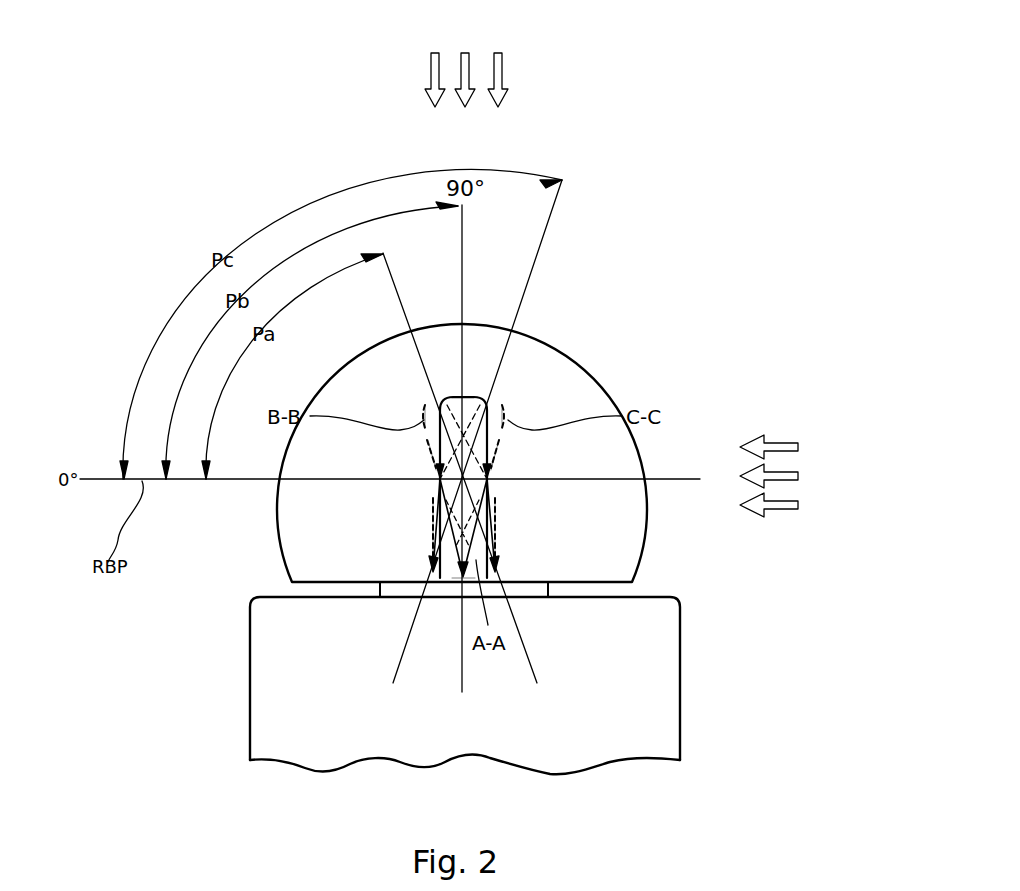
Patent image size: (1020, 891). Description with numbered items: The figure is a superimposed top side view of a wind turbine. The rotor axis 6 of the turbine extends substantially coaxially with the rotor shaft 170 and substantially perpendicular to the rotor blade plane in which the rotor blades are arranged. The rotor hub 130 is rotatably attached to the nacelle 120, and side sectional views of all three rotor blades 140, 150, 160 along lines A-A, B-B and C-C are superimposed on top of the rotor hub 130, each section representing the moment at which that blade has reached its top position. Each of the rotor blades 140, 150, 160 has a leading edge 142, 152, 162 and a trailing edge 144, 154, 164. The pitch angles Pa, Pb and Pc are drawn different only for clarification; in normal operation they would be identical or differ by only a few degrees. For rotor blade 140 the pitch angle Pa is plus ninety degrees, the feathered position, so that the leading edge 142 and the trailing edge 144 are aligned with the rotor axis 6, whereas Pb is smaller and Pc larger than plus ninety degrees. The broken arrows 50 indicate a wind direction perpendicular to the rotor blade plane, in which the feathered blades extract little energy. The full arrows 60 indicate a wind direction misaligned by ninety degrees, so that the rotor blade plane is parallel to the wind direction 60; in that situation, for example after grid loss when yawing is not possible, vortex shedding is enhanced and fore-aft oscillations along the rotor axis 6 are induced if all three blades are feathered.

The rotor axis 6 is at (464, 688).
The broken arrows 50 is at (505, 70).
The full arrows 60 is at (770, 440).
The nacelle 120 is at (668, 640).
The rotor hub 130 is at (300, 566).
The rotor blade 140 is at (492, 503).
The leading edge 142 is at (466, 396).
The trailing edge 144 is at (523, 593).
The rotor blade 150 is at (432, 462).
The leading edge 152 is at (439, 399).
The trailing edge 154 is at (500, 543).
The rotor blade 160 is at (492, 456).
The leading edge 162 is at (490, 400).
The trailing edge 164 is at (432, 567).
The rotor shaft 170 is at (548, 587).